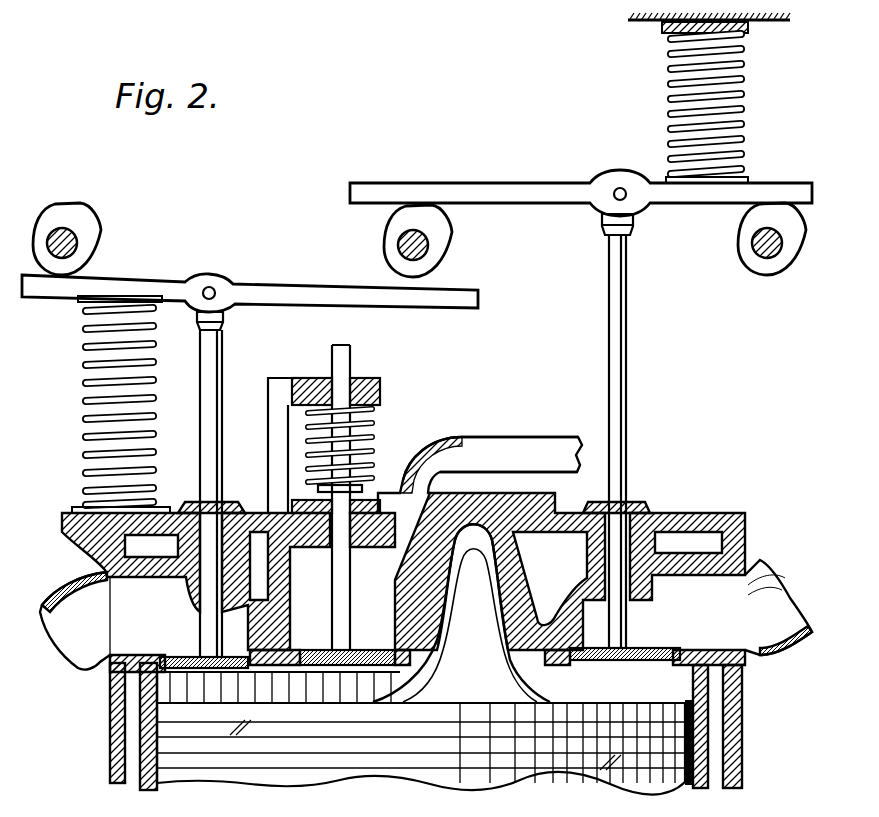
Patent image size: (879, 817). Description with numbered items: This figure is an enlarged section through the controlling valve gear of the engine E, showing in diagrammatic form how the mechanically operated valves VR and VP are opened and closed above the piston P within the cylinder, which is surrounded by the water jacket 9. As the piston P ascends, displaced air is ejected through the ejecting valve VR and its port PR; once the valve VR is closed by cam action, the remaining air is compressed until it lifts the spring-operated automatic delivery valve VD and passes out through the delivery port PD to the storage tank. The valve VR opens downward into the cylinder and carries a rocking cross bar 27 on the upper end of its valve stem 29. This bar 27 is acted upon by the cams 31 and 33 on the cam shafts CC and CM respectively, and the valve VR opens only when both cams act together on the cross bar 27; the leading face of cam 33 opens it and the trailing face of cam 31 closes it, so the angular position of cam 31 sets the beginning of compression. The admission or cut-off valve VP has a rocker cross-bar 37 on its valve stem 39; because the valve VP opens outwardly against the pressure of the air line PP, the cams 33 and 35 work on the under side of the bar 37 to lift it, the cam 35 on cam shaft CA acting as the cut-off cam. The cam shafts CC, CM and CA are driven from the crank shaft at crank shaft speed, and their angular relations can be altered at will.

The rocking cross bar 27 is at (297, 263).
The valve stem 29 is at (221, 372).
The cam 31 is at (73, 233).
The cam shaft CC is at (78, 248).
The cam 33 is at (425, 228).
The cam shaft CM is at (430, 250).
The cam 35 is at (770, 223).
The cam shaft CA is at (752, 244).
The rocker cross-bar 37 is at (500, 191).
The valve stem 39 is at (628, 400).
The delivery port PD is at (490, 452).
The ejecting valve VR is at (190, 660).
The automatic delivery valve VD is at (322, 655).
The cut-off valve VP is at (640, 667).
The port PR is at (90, 637).
The outlet line or manifold PP is at (768, 600).
The engine E is at (105, 713).
The jacket 9 is at (135, 740).
The piston P is at (421, 733).